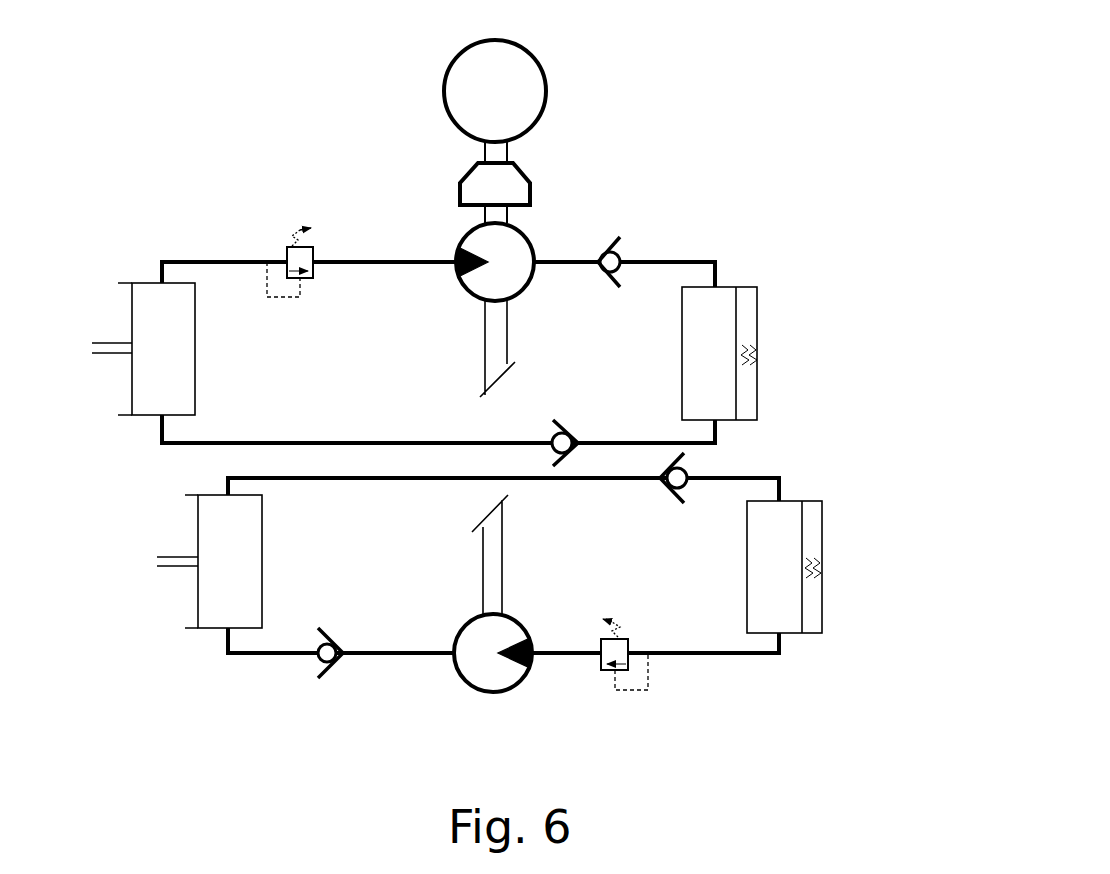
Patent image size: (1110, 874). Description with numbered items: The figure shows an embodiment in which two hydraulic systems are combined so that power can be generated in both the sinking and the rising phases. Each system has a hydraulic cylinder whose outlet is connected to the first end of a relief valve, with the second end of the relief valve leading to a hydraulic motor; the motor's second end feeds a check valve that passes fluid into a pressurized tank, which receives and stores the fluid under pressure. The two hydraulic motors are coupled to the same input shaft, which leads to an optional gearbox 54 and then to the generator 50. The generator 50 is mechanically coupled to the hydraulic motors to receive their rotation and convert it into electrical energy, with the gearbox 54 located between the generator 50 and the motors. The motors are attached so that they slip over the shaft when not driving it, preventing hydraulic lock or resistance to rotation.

The generator 50 is at (566, 80).
The gearbox 54 is at (544, 189).